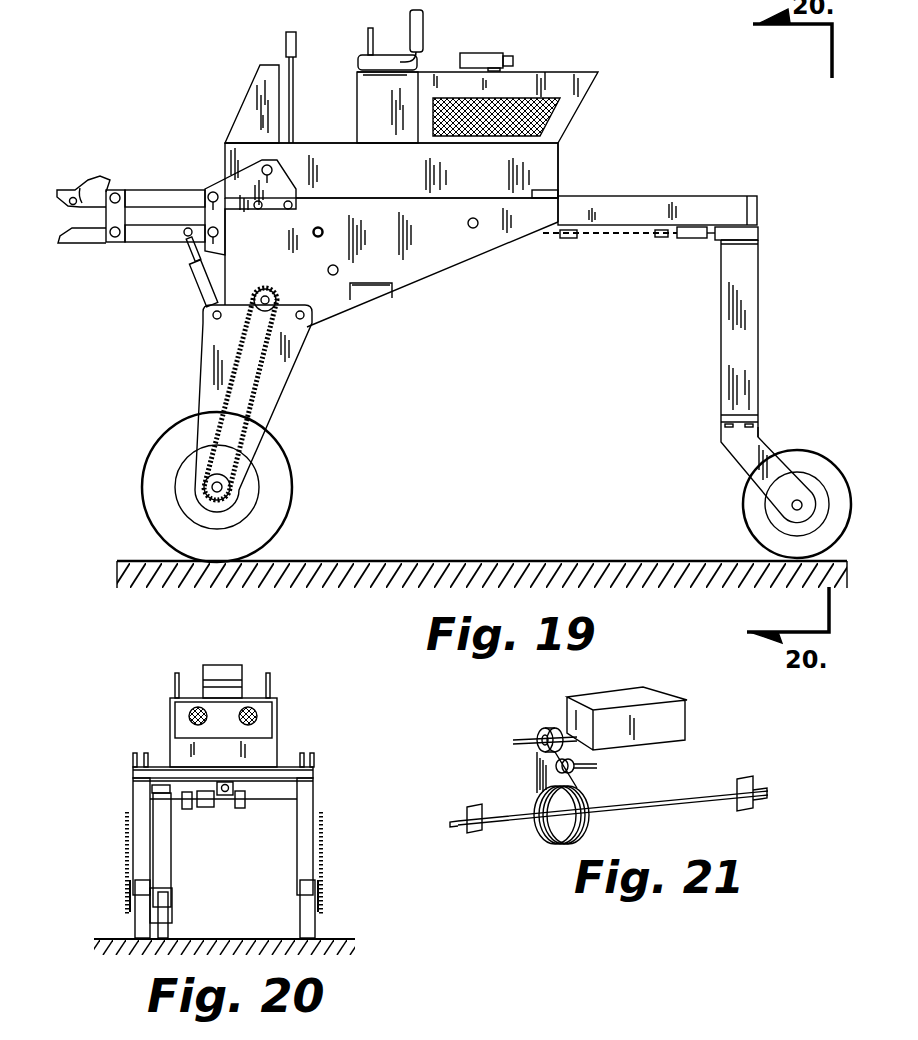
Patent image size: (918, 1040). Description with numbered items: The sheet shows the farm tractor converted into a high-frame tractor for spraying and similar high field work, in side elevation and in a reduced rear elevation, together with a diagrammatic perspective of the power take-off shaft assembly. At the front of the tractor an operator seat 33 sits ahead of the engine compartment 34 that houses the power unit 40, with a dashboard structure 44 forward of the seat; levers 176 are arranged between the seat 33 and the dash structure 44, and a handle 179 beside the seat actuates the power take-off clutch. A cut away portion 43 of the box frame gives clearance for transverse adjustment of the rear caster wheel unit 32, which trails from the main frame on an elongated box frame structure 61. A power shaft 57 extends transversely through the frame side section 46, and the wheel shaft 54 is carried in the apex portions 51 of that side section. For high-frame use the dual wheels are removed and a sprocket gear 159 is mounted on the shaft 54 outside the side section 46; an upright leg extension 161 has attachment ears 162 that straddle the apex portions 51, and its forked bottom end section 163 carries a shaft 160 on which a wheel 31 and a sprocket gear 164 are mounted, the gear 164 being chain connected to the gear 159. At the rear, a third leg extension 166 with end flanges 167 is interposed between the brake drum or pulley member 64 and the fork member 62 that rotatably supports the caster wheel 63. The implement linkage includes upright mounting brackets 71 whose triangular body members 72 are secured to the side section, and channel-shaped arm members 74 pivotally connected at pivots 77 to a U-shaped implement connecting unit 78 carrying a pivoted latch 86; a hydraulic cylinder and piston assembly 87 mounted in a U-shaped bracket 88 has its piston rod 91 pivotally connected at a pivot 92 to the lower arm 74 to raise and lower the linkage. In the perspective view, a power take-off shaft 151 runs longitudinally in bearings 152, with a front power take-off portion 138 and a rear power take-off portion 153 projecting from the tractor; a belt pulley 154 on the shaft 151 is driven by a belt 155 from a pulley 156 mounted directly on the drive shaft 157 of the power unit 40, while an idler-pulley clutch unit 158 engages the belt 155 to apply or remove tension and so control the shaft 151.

In FIG. 19, the dual front wheels 31 is at (282, 492).
In FIG. 20, the dual front wheels 31 is at (140, 928).
In FIG. 19, the rear caster wheel unit 32 is at (775, 440).
In FIG. 20, the rear caster wheel unit 32 is at (180, 891).
In FIG. 19, the front operator seat 33 is at (398, 38).
In FIG. 20, the front operator seat 33 is at (225, 690).
In FIG. 19, the engine compartment 34 is at (548, 70).
In FIG. 20, the engine compartment 34 is at (263, 717).
In FIG. 21, the tractor power unit 40 is at (655, 695).
In FIG. 19, the cut away portion 43 is at (558, 192).
In FIG. 19, the dashboard structure 44 is at (262, 65).
In FIG. 19, the side section 46 is at (462, 255).
In FIG. 19, the apex portions 51 is at (323, 307).
In FIG. 19, the wheel shaft 54 is at (270, 296).
In FIG. 19, the power shaft 57 is at (320, 228).
In FIG. 19, the elongated box frame structure 61 is at (650, 200).
In FIG. 19, the fork member 62 is at (745, 460).
In FIG. 20, the fork member 62 is at (173, 907).
In FIG. 19, the caster wheel 63 is at (752, 520).
In FIG. 20, the caster wheel 63 is at (168, 927).
In FIG. 19, the brake drum or pulley member 64 is at (760, 232).
In FIG. 19, the mounting brackets 71 is at (222, 187).
In FIG. 19, the body member 72 is at (280, 172).
In FIG. 19, the arm members 74 is at (135, 190).
In FIG. 19, the arm pivots 77 is at (115, 193).
In FIG. 19, the implement connecting unit 78 is at (78, 254).
In FIG. 19, the latch 86 is at (95, 180).
In FIG. 19, the hydraulic cylinder and piston assembly 87 is at (203, 290).
In FIG. 19, the U-shape bracket 88 is at (210, 310).
In FIG. 19, the piston rod 91 is at (196, 262).
In FIG. 19, the piston rod pivot 92 is at (187, 236).
In FIG. 21, the front power take-off portion 138 is at (462, 828).
In FIG. 21, the power take-off shaft 151 is at (648, 800).
In FIG. 21, the bearings 152 is at (478, 833).
In FIG. 21, the rear power take-off portion 153 is at (752, 790).
In FIG. 21, the belt pulley 154 is at (562, 838).
In FIG. 21, the belt 155 is at (535, 785).
In FIG. 21, the pulley 156 is at (542, 728).
In FIG. 21, the drive shaft 157 is at (565, 722).
In FIG. 21, the clutch unit 158 is at (574, 770).
In FIG. 19, the sprocket gear 159 is at (285, 318).
In FIG. 20, the sprocket gear 159 is at (127, 822).
In FIG. 19, the wheel shaft 160 is at (212, 487).
In FIG. 20, the wheel shaft 160 is at (130, 912).
In FIG. 19, the upright leg extension 161 is at (272, 394).
In FIG. 20, the upright leg extension 161 is at (140, 860).
In FIG. 20, the attachment ears 162 is at (133, 810).
In FIG. 19, the bottom end section 163 is at (248, 474).
In FIG. 20, the bottom end section 163 is at (300, 898).
In FIG. 19, the sprocket gear 164 is at (208, 478).
In FIG. 19, the third upright leg extension 166 is at (755, 325).
In FIG. 20, the third upright leg extension 166 is at (165, 857).
In FIG. 19, the flanges 167 is at (760, 240).
In FIG. 19, the levers 176 is at (296, 45).
In FIG. 20, the levers 176 is at (173, 677).
In FIG. 19, the handle 179 is at (366, 42).